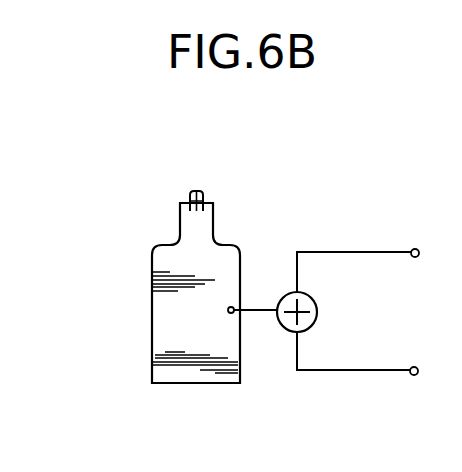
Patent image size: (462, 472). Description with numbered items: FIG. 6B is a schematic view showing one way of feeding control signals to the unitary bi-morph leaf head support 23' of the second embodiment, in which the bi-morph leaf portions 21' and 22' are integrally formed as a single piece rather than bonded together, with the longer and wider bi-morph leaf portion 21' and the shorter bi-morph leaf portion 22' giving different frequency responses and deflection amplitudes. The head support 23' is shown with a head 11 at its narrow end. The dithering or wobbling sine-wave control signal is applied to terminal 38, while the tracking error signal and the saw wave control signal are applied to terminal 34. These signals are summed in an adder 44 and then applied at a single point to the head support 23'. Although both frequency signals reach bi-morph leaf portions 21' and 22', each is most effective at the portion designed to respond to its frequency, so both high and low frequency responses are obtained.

The cap 11 is at (200, 194).
The bi-morph leaf portion 22' is at (159, 218).
The unitary head support 23' is at (148, 304).
The bi-morph leaf portion 21' is at (165, 317).
The adder 44 is at (317, 309).
The terminal 38 is at (416, 249).
The terminal 34 is at (415, 367).